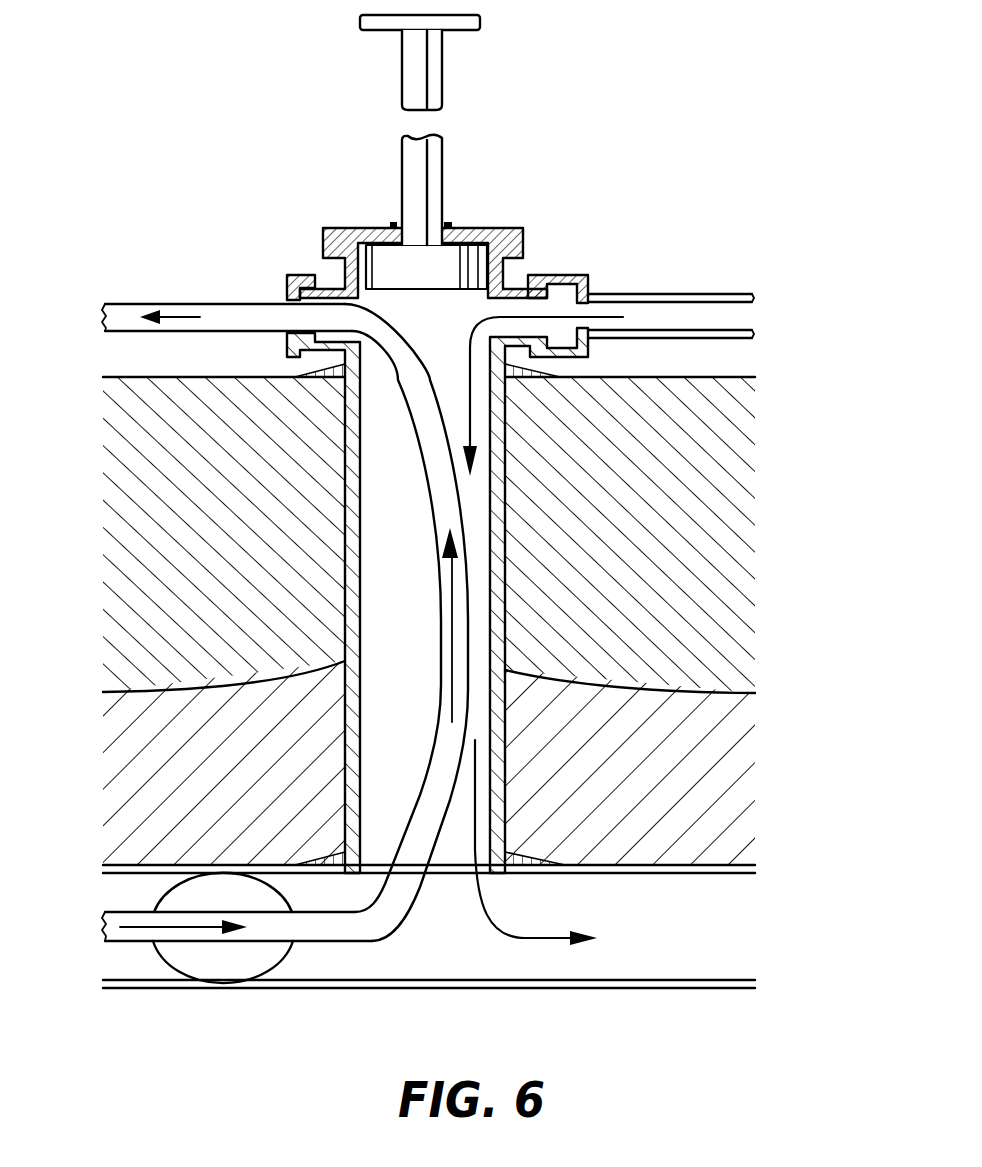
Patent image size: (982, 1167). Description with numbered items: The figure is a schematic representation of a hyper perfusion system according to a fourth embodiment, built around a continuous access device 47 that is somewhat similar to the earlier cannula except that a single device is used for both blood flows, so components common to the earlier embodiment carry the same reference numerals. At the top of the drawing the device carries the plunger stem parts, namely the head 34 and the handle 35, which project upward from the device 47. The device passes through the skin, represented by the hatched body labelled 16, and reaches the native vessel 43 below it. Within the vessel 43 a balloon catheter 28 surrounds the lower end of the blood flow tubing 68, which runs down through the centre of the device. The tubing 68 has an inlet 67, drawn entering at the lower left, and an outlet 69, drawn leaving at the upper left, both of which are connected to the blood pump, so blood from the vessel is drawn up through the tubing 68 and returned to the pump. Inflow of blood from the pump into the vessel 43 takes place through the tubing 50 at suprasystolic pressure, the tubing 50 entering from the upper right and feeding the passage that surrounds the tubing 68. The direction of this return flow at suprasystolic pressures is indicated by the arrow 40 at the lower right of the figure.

The skin 16 is at (738, 377).
The balloon catheter 28 is at (215, 965).
The head 34 is at (460, 258).
The handle 35 is at (433, 157).
The arrow indicating direction of return flow 40 is at (495, 903).
The native vessel 43 is at (738, 874).
The continuous access device 47 is at (340, 268).
The tubing 50 is at (722, 293).
The inlet 67 is at (135, 912).
The blood flow tubing 68 is at (414, 903).
The outlet 69 is at (222, 300).